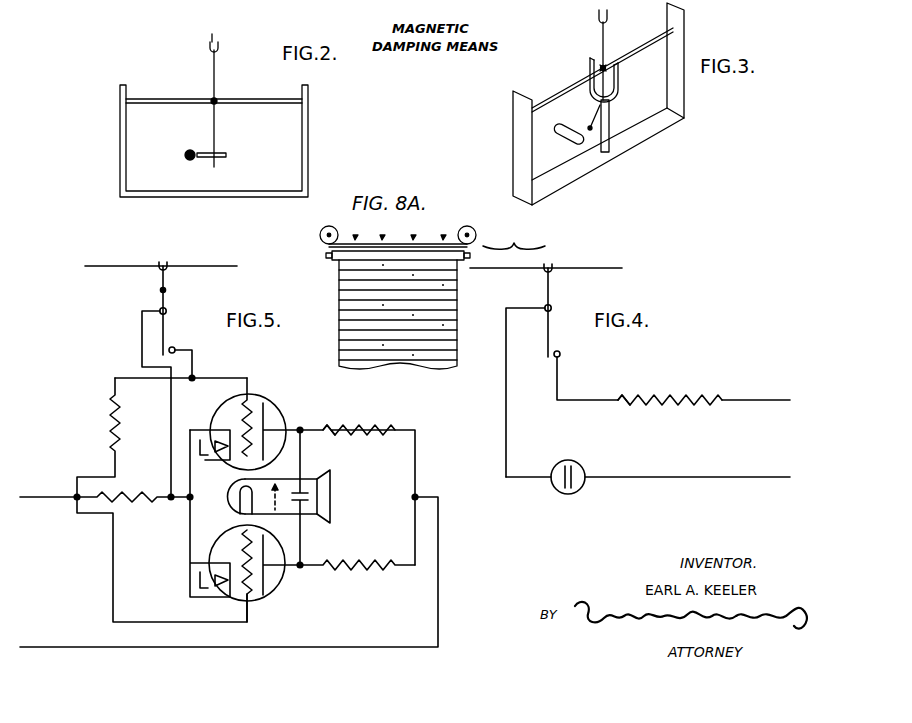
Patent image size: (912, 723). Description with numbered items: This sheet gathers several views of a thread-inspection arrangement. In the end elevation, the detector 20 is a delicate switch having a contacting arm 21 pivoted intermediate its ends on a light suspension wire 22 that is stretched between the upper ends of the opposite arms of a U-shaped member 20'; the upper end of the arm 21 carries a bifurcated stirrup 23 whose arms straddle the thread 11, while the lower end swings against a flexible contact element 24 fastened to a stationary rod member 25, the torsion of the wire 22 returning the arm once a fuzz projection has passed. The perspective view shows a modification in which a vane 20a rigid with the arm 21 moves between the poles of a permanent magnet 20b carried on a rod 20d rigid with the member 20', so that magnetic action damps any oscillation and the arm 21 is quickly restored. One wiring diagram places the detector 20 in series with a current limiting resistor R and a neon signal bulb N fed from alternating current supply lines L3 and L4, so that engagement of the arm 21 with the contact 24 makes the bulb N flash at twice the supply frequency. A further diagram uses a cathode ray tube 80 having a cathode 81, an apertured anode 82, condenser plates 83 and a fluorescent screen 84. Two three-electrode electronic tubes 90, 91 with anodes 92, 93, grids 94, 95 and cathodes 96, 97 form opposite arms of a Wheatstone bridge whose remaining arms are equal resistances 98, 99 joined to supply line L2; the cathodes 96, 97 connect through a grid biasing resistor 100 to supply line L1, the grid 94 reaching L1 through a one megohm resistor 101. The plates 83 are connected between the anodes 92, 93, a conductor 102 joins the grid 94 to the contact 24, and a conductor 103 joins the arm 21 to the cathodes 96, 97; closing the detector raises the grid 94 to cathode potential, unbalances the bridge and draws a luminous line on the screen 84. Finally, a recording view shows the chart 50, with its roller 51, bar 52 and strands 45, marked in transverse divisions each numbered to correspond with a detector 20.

In FIG. 2, the thread 11 is at (212, 34).
In FIG. 5, the thread 11 is at (190, 266).
In FIG. 4, the thread 11 is at (605, 268).
In FIG. 4, the detector 20 is at (514, 235).
In FIG. 2, the U-shaped member 20' is at (233, 141).
In FIG. 3, the U-shaped member 20' is at (620, 104).
In FIG. 3, the vane 20a is at (606, 67).
In FIG. 3, the permanent magnet 20b is at (590, 72).
In FIG. 3, the rod 20d is at (610, 120).
In FIG. 2, the contacting arm 21 is at (212, 74).
In FIG. 3, the contacting arm 21 is at (600, 34).
In FIG. 5, the contacting arm 21 is at (165, 290).
In FIG. 4, the contacting arm 21 is at (551, 293).
In FIG. 2, the suspension wire 22 is at (232, 98).
In FIG. 3, the suspension wire 22 is at (552, 96).
In FIG. 5, the suspension wire 22 is at (167, 311).
In FIG. 4, the suspension wire 22 is at (528, 391).
In FIG. 2, the stirrup 23 is at (219, 46).
In FIG. 3, the stirrup 23 is at (607, 16).
In FIG. 5, the stirrup 23 is at (163, 266).
In FIG. 4, the stirrup 23 is at (551, 265).
In FIG. 2, the flexible contact element 24 is at (218, 153).
In FIG. 3, the flexible contact element 24 is at (591, 130).
In FIG. 5, the flexible contact element 24 is at (175, 348).
In FIG. 2, the stationary rod member 25 is at (187, 151).
In FIG. 3, the stationary rod member 25 is at (562, 135).
In FIG. 8A, the strands 45 is at (382, 238).
In FIG. 8A, the chart 50 is at (357, 311).
In FIG. 8A, the roller 51 is at (320, 214).
In FIG. 8A, the bar 52 is at (331, 258).
In FIG. 5, the cathode ray tube 80 is at (232, 500).
In FIG. 5, the cathode 81 is at (238, 507).
In FIG. 5, the anode 82 is at (278, 488).
In FIG. 5, the condenser plates 83 is at (310, 494).
In FIG. 5, the fluorescent screen 84 is at (333, 508).
In FIG. 5, the three-electrode electronic tube 90 is at (268, 405).
In FIG. 5, the three-electrode electronic tube 91 is at (280, 590).
In FIG. 5, the anode 92 is at (266, 426).
In FIG. 5, the anode 93 is at (266, 578).
In FIG. 5, the grid 94 is at (250, 402).
In FIG. 5, the grid 95 is at (250, 600).
In FIG. 5, the cathode 96 is at (200, 440).
In FIG. 5, the cathode 97 is at (193, 578).
In FIG. 5, the resistance 98 is at (356, 428).
In FIG. 5, the resistance 99 is at (357, 570).
In FIG. 5, the grid biasing resistor 100 is at (133, 495).
In FIG. 5, the one megohm resistor 101 is at (112, 410).
In FIG. 5, the conductor 102 is at (193, 372).
In FIG. 5, the conductor 103 is at (142, 335).
In FIG. 4, the current limiting resistor R is at (663, 398).
In FIG. 4, the neon signal bulb N is at (570, 462).
In FIG. 5, the alternating current supply line L1 is at (30, 497).
In FIG. 5, the alternating current supply line L2 is at (30, 647).
In FIG. 4, the alternating current supply line L3 is at (758, 400).
In FIG. 4, the alternating current supply line L4 is at (726, 477).